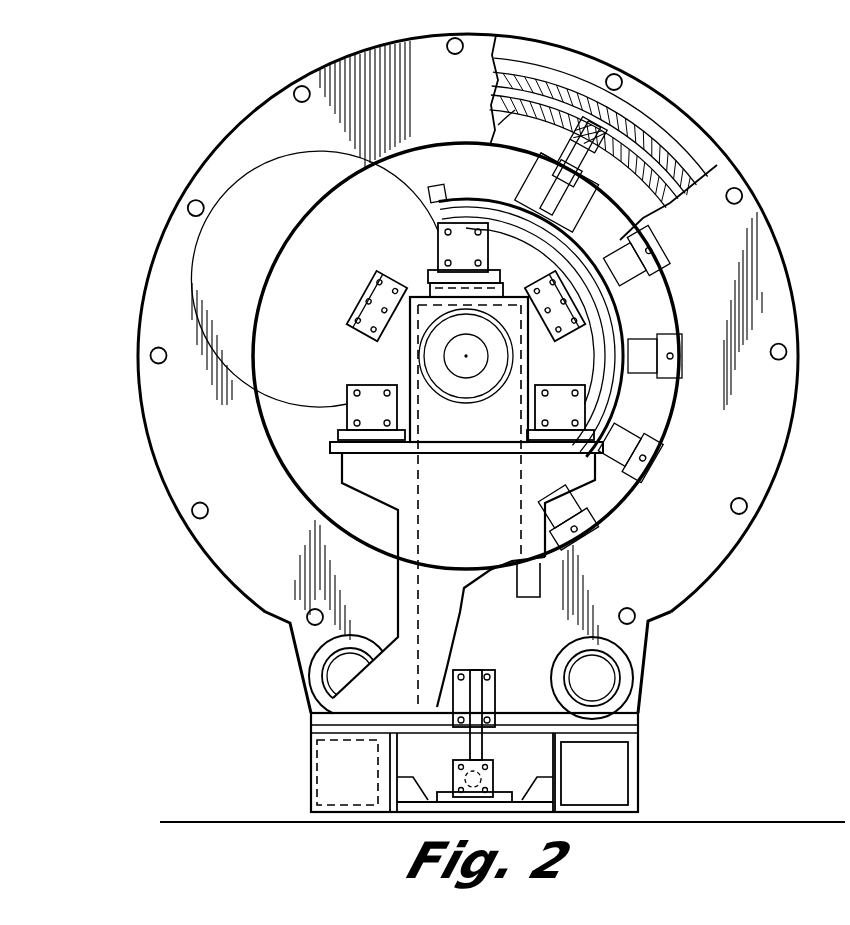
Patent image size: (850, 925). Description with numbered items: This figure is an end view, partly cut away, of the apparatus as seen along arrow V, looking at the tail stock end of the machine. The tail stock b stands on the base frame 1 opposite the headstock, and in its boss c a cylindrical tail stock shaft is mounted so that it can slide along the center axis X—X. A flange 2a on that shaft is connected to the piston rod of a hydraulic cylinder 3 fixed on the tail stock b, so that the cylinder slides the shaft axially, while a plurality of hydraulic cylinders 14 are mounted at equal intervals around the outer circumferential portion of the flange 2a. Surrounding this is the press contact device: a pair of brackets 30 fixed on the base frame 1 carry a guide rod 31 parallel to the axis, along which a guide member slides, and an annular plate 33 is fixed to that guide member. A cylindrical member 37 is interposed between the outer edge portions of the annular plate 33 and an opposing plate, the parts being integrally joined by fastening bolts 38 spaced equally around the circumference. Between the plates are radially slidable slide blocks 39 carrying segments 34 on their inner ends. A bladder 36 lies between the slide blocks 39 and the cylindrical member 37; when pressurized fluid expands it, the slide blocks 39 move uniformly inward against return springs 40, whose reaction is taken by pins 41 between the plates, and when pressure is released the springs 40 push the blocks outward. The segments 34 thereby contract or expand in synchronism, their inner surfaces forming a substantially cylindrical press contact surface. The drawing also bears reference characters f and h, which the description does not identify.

The base frame 1 is at (640, 776).
The flange 2a is at (353, 298).
The hydraulic cylinder 3 is at (460, 222).
The hydraulic cylinders 14 is at (340, 345).
The brackets 30 is at (318, 647).
The guide rod 31 is at (342, 674).
The annular plate 33 is at (789, 283).
The segments 34 is at (490, 203).
The bladder 36 is at (707, 151).
The cylindrical member 37 is at (688, 125).
The fastening bolts 38 is at (743, 197).
The slide blocks 39 is at (550, 142).
The return springs 40 is at (598, 188).
The pin 41 is at (550, 172).
The tail stock b is at (357, 465).
The boss c is at (423, 387).
The force direction arrow f is at (398, 520).
The hub h is at (503, 342).